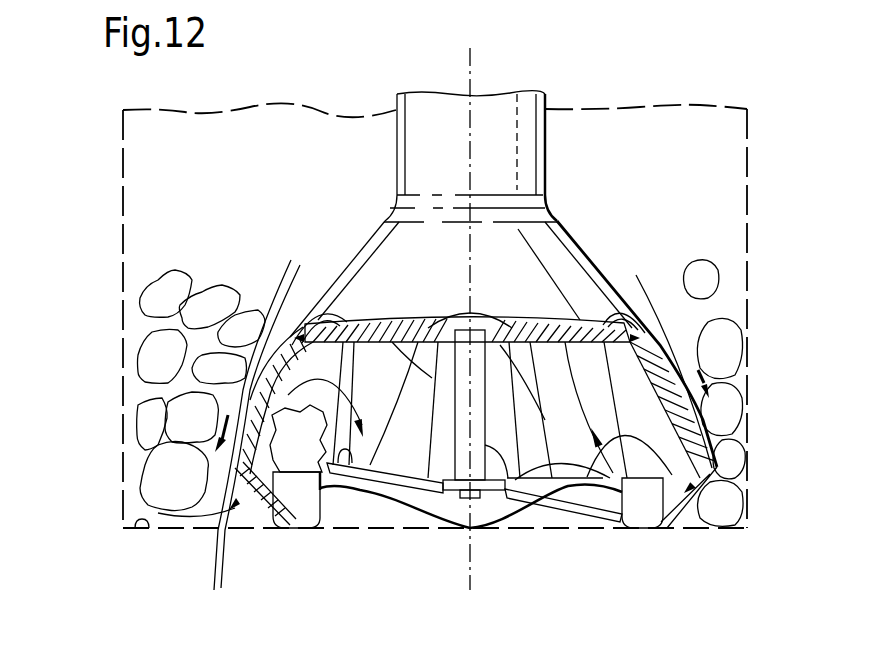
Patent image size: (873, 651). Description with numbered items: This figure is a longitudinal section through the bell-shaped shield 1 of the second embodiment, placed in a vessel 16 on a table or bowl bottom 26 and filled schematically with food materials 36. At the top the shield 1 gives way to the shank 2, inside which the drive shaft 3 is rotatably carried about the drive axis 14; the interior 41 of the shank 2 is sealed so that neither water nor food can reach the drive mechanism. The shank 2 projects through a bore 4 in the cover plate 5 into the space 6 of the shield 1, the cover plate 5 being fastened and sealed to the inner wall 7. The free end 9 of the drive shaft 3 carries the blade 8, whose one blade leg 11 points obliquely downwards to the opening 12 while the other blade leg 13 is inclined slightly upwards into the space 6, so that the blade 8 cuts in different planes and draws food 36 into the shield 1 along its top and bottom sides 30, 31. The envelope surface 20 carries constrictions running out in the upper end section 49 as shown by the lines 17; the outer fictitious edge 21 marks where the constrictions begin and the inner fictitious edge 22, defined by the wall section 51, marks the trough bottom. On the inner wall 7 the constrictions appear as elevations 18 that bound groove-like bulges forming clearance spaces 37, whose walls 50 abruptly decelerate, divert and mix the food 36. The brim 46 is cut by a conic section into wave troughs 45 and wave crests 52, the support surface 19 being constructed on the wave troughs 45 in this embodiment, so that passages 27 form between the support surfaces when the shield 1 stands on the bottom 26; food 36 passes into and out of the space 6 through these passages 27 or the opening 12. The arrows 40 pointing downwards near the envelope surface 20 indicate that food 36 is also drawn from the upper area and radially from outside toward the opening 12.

The shield 1 is at (603, 226).
The shank 2 is at (502, 103).
The drive shaft 3 is at (527, 512).
The bore 4 is at (423, 318).
The cover plate 5 is at (588, 318).
The space 6 is at (364, 528).
The inner wall 7 is at (268, 368).
The blade 8 is at (434, 513).
The free end 9 is at (458, 500).
The blade leg 11 is at (590, 512).
The opening 12 is at (697, 498).
The blade leg 13 is at (397, 517).
The drive axis 14 is at (470, 70).
The vessel 16 is at (123, 192).
The lines 17 is at (453, 310).
The elevation 18 is at (294, 512).
The support surface 19 is at (640, 532).
The envelope surface 20 is at (690, 320).
The outer fictitious edge 21 is at (510, 330).
The inner fictitious edge 22 is at (547, 323).
The bottom 26 is at (148, 530).
The passages 27 is at (687, 530).
The top side 30 is at (362, 508).
The bottom side 31 is at (550, 512).
The food materials 36 is at (177, 272).
The clearance spaces 37 is at (250, 475).
The arrows 40 is at (285, 310).
The interior 41 is at (388, 318).
The wave troughs 45 is at (382, 508).
The brim 46 is at (252, 441).
The upper end section 49 is at (307, 323).
The walls 50 is at (297, 373).
The wall section 51 is at (392, 322).
The wave crests 52 is at (298, 528).